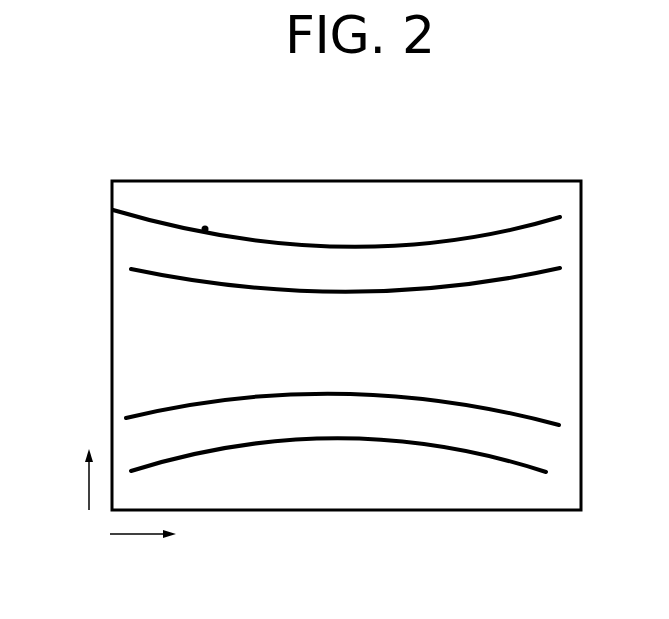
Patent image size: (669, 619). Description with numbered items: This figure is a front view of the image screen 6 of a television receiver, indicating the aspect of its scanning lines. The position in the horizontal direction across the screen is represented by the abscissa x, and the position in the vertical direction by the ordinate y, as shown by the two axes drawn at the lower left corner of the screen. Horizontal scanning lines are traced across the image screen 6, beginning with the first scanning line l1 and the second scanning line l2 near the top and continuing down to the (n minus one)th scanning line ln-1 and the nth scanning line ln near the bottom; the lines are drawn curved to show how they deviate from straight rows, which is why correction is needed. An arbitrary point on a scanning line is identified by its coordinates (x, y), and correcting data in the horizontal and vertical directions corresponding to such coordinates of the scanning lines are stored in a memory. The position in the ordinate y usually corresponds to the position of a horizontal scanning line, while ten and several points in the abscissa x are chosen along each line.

The image screen 6 is at (502, 181).
The first scanning line l1 is at (366, 238).
The second scanning line l2 is at (375, 275).
The (n-1)th scanning line ln-1 is at (379, 420).
The nth scanning line ln is at (374, 469).
The horizontal position coordinate x is at (143, 549).
The vertical position coordinate y is at (76, 479).